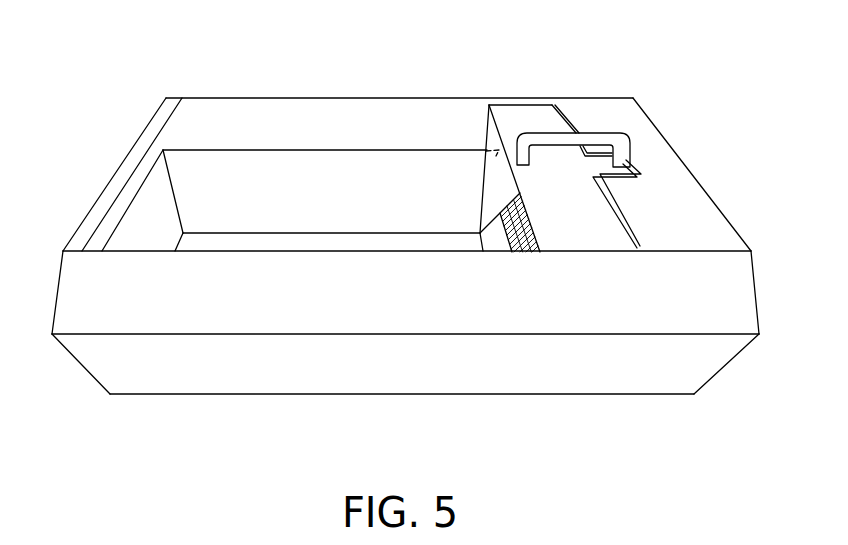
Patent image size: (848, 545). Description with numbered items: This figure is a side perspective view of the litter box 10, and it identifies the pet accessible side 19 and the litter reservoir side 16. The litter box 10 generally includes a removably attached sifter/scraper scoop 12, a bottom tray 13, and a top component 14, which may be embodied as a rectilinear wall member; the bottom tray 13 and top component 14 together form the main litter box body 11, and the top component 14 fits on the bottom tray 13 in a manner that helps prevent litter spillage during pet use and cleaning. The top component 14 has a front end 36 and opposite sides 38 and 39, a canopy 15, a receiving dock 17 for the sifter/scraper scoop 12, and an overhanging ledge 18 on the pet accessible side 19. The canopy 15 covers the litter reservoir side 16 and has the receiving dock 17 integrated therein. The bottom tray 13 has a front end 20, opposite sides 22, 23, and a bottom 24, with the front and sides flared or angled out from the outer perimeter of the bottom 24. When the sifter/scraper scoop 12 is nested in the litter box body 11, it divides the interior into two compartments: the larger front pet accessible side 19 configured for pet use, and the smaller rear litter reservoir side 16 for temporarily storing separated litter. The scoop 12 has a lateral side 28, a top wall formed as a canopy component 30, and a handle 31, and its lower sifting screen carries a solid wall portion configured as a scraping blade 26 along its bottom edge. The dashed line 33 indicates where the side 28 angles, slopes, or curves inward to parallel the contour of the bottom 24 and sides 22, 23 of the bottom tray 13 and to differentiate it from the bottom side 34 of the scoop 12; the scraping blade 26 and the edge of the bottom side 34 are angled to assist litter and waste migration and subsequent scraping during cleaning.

The litter box 10 is at (193, 43).
The main litter box body 11 is at (775, 334).
The sifter/scraper scoop 12 is at (519, 122).
The bottom tray 13 is at (75, 374).
The top component 14 is at (48, 279).
The canopy 15 is at (708, 215).
The litter reservoir side 16 is at (532, 430).
The receiving dock 17 is at (633, 167).
The overhanging ledge 18 is at (123, 176).
The pet accessible side 19 is at (106, 430).
The front end 20 is at (163, 213).
The side 22 is at (378, 204).
The side 23 is at (378, 374).
The bottom 24 is at (287, 242).
The scraping blade 26 is at (483, 250).
The lateral side 28 is at (488, 130).
The canopy component 30 is at (581, 229).
The handle 31 is at (595, 134).
The dashed line 33 is at (480, 168).
The bottom side 34 is at (495, 193).
The front end 36 is at (157, 143).
The side 38 is at (378, 137).
The side 39 is at (378, 300).